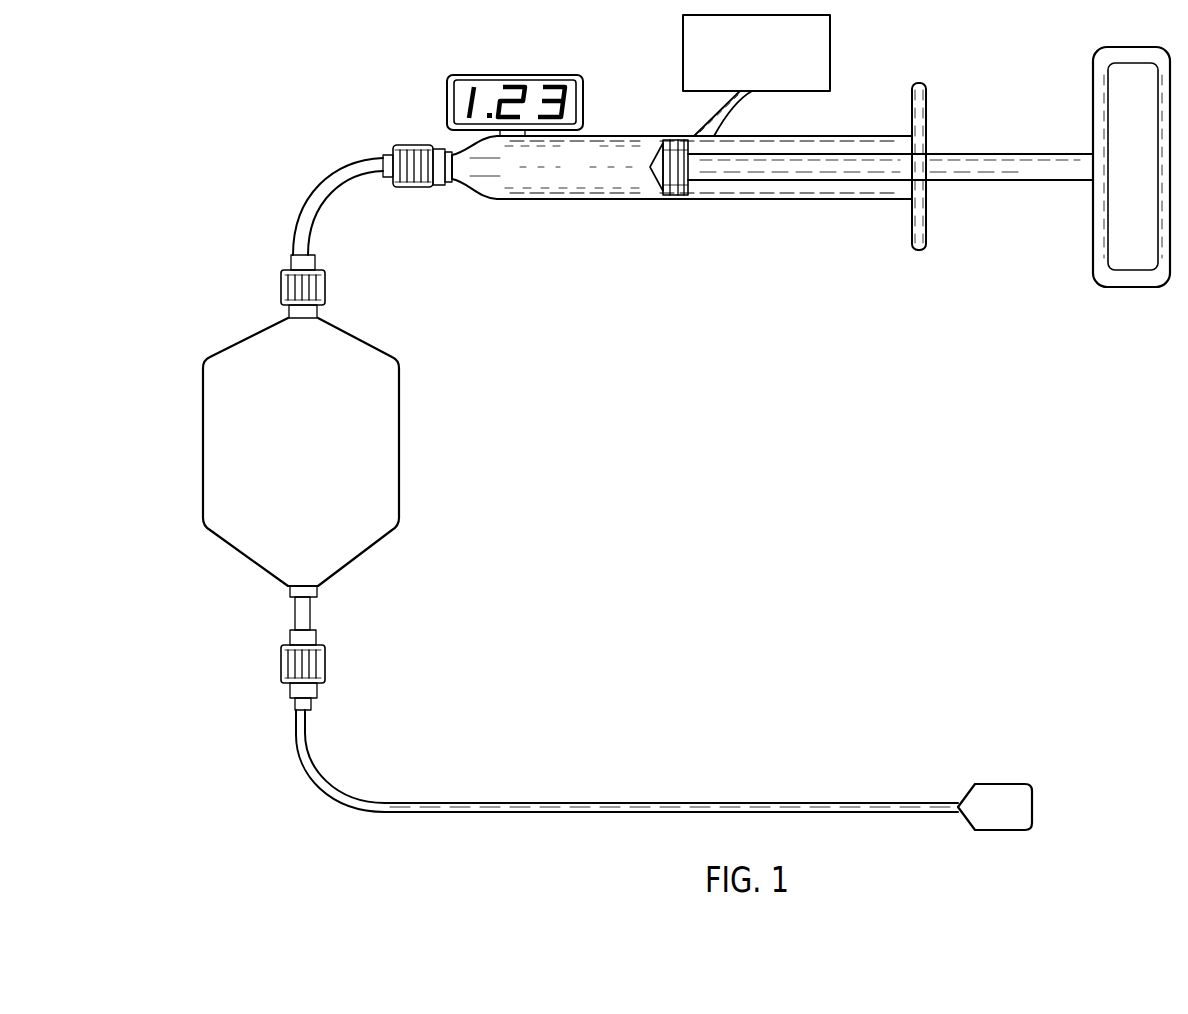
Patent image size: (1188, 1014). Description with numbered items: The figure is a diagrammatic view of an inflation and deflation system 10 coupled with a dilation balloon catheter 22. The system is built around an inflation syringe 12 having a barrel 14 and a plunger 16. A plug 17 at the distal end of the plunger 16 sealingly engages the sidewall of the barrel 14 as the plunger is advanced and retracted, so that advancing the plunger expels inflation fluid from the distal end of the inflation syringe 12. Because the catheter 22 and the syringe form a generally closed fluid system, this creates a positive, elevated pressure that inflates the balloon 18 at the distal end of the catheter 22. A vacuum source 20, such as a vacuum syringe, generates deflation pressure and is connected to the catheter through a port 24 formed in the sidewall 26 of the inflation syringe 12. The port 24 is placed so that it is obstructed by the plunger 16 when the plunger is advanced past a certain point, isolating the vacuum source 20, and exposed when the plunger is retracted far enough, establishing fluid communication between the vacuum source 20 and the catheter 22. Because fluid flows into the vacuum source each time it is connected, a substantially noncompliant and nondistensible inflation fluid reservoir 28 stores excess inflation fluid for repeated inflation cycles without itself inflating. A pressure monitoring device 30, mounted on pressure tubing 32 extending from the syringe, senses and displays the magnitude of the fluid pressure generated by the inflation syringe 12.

The inflation and deflation system 10 is at (951, 65).
The inflation syringe 12 is at (800, 213).
The barrel 14 is at (530, 170).
The plunger 16 is at (985, 163).
The plug 17 is at (665, 190).
The balloon 18 is at (1000, 790).
The vacuum source 20 is at (822, 38).
The dilation balloon catheter 22 is at (325, 782).
The port 24 is at (698, 135).
The sidewall 26 is at (620, 200).
The inflation fluid reservoir 28 is at (355, 452).
The pressure monitoring device 30 is at (493, 83).
The pressure tubing 32 is at (325, 188).